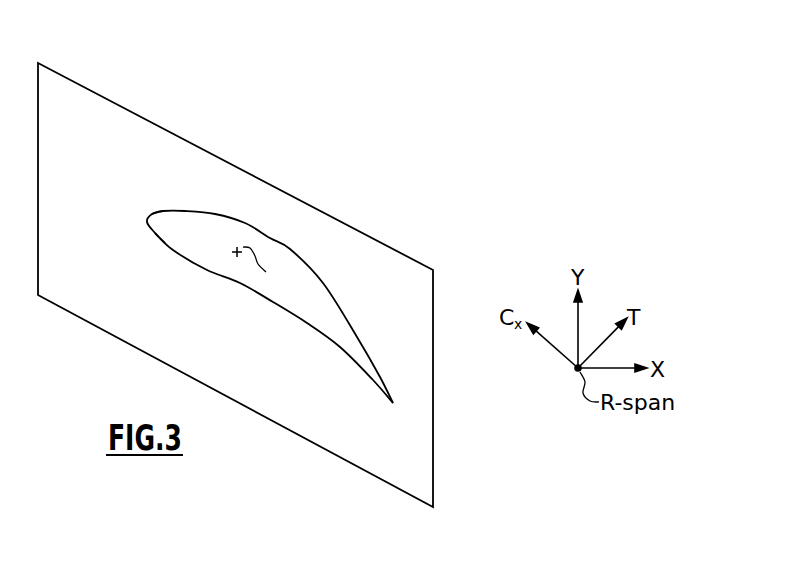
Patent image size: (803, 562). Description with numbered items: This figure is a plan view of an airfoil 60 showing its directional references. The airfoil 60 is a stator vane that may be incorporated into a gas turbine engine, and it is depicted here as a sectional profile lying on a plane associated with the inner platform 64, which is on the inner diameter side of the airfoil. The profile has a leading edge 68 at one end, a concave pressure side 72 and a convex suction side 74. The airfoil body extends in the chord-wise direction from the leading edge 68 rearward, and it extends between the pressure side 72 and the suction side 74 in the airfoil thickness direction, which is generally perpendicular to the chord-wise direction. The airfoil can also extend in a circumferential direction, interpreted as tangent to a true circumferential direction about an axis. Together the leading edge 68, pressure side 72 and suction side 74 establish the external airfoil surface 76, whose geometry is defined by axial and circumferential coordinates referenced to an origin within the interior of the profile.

The airfoil 60 is at (246, 99).
The inner platform 64 is at (110, 93).
The leading edge 68 is at (147, 222).
The pressure side 72 is at (238, 285).
The suction side 74 is at (252, 223).
The external airfoil surface 76 is at (238, 281).